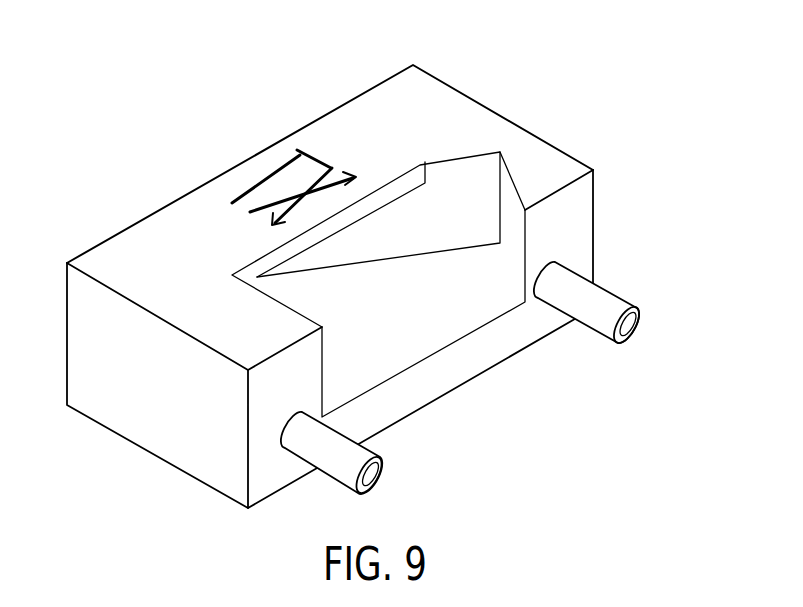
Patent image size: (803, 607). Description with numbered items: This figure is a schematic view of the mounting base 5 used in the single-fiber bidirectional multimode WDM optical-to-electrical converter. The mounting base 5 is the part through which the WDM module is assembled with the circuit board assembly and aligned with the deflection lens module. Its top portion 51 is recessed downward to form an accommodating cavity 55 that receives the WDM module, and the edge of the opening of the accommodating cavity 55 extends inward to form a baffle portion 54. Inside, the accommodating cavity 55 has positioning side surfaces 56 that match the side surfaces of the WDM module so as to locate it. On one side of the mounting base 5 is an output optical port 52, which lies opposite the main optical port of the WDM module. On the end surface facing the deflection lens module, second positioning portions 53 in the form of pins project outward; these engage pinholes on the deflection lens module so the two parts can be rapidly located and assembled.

The mounting base 5 is at (373, 258).
The top portion 51 is at (389, 85).
The output optical port 52 is at (72, 247).
The second positioning portions 53 is at (632, 328).
The baffle portion 54 is at (343, 218).
The accommodating cavity 55 is at (406, 311).
The positioning side surfaces 56 is at (465, 203).